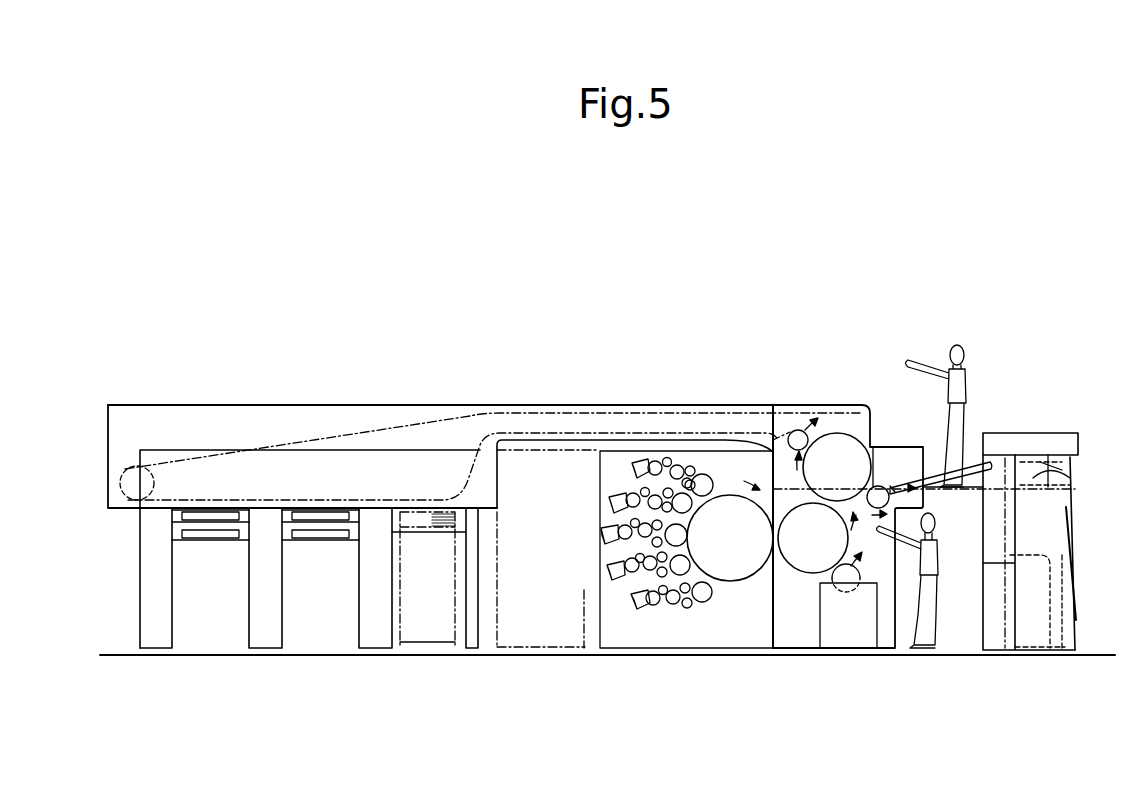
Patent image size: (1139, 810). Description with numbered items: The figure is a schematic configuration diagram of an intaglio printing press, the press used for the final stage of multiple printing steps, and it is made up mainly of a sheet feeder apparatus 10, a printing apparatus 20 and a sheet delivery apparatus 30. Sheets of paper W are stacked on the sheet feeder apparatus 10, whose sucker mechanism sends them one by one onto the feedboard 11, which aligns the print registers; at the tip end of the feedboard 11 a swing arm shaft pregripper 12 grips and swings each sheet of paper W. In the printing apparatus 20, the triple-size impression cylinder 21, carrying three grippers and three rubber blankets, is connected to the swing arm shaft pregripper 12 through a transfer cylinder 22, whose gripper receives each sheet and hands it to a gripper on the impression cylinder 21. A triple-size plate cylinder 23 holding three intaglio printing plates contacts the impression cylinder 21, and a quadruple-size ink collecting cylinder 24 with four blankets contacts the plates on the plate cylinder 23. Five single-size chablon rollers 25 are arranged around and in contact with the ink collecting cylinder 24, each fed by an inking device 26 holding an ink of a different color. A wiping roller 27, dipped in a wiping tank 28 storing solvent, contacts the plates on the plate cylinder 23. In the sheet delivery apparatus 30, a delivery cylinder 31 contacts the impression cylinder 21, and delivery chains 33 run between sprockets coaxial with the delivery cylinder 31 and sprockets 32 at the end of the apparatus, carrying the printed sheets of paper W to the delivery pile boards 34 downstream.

The sheet feeder apparatus 10 is at (1042, 430).
The feedboard 11 is at (942, 466).
The swing arm shaft pregripper 12 is at (892, 485).
The printing apparatus 20 is at (847, 385).
The impression cylinder 21 is at (838, 433).
The transfer cylinder 22 is at (878, 447).
The plate cylinder 23 is at (803, 572).
The ink collecting cylinder 24 is at (747, 580).
The chablon rollers 25 is at (700, 478).
The inking devices 26 is at (645, 455).
The wiping roller 27 is at (876, 580).
The wiping tank 28 is at (820, 625).
The sheet delivery apparatus 30 is at (425, 398).
The delivery cylinder 31 is at (800, 430).
The sprockets 32 is at (131, 492).
The delivery chains 33 is at (522, 413).
The delivery pile boards 34 is at (436, 650).
The sheets of paper W is at (1070, 478).